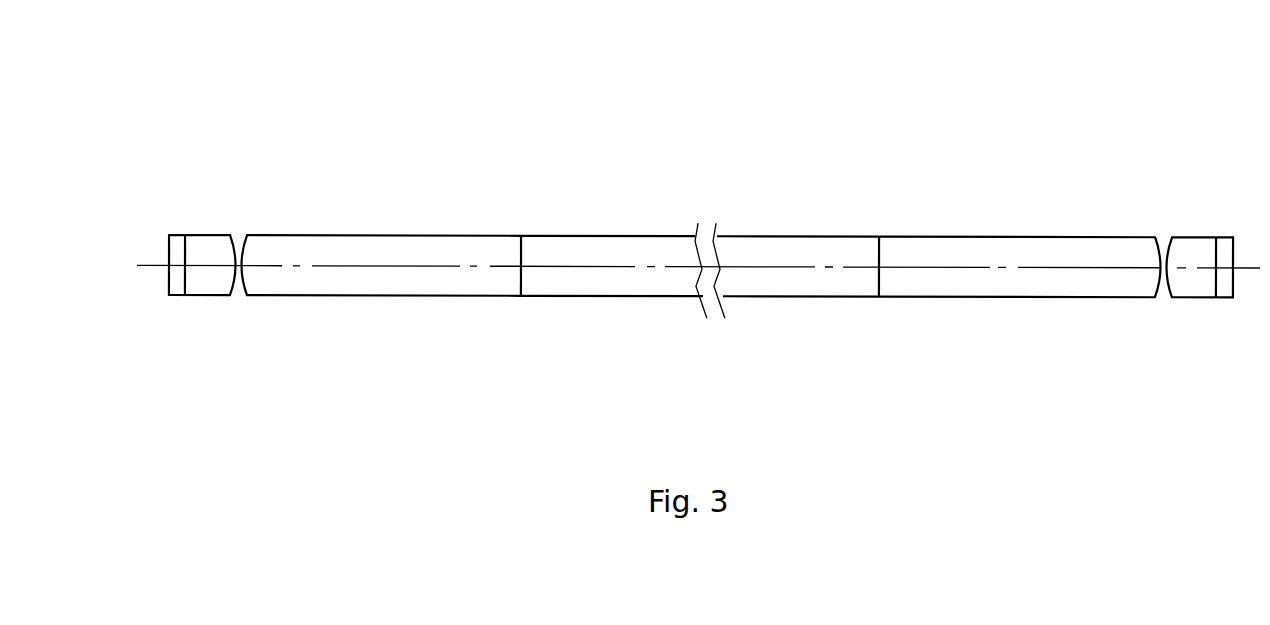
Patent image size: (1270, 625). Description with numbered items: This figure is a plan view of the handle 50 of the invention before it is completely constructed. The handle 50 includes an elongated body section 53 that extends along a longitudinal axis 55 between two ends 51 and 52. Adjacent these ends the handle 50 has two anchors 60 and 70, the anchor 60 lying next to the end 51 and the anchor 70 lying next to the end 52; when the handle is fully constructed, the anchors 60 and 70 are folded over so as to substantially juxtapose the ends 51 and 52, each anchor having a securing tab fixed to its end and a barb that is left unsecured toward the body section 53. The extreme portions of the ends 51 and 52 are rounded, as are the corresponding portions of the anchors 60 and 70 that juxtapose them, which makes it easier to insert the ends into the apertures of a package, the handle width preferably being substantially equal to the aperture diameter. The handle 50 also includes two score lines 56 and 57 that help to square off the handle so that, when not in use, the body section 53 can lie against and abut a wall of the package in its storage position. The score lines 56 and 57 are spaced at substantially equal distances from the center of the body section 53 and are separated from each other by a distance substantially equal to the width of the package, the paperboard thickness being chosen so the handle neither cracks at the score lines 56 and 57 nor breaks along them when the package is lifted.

The handle 50 is at (733, 242).
The end 51 is at (360, 294).
The end 52 is at (1128, 297).
The elongated body section 53 is at (652, 283).
The longitudinal axis 55 is at (144, 265).
The score line 56 is at (521, 296).
The score line 57 is at (882, 297).
The anchor 60 is at (215, 295).
The anchor 70 is at (1205, 297).